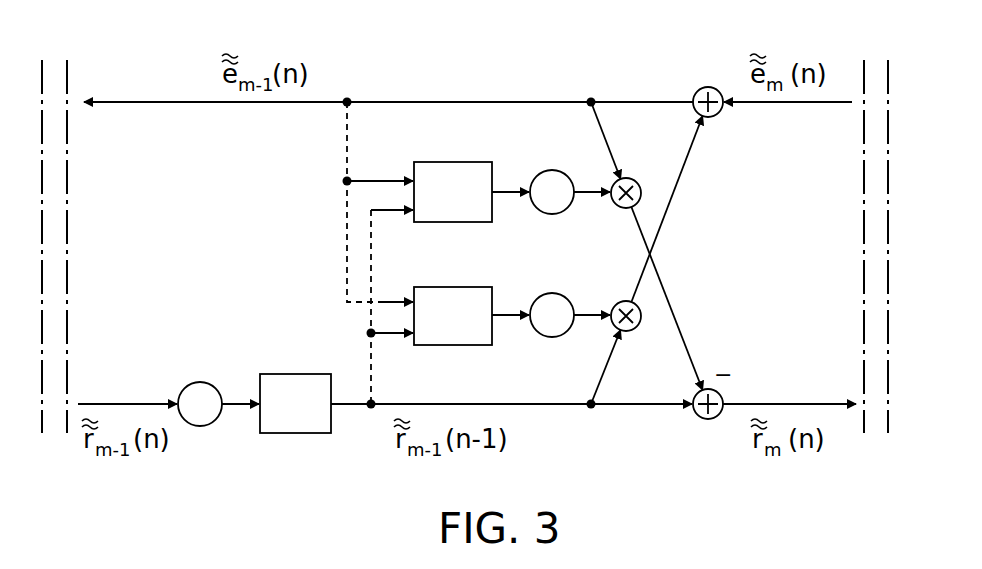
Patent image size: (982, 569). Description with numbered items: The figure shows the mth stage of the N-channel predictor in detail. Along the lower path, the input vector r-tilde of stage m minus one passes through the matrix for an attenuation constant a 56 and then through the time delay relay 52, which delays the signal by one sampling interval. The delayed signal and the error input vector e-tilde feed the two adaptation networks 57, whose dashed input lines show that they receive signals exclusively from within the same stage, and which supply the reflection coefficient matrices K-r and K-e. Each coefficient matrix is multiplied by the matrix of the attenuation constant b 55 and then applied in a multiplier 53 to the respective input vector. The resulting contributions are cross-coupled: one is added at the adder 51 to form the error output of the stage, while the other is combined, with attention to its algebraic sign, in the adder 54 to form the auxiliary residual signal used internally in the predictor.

The adder 51 is at (708, 87).
The time delay relay 52 is at (296, 433).
The multiplier 53 is at (622, 207).
The adder 54 is at (705, 419).
The attenuation constant b 55 is at (545, 171).
The attenuation constant a 56 is at (199, 427).
The adaptation network 57 is at (460, 162).